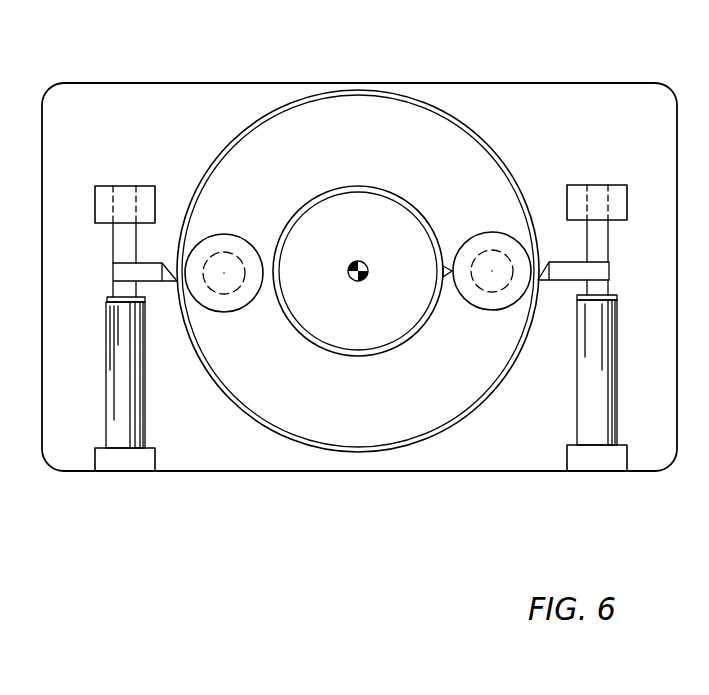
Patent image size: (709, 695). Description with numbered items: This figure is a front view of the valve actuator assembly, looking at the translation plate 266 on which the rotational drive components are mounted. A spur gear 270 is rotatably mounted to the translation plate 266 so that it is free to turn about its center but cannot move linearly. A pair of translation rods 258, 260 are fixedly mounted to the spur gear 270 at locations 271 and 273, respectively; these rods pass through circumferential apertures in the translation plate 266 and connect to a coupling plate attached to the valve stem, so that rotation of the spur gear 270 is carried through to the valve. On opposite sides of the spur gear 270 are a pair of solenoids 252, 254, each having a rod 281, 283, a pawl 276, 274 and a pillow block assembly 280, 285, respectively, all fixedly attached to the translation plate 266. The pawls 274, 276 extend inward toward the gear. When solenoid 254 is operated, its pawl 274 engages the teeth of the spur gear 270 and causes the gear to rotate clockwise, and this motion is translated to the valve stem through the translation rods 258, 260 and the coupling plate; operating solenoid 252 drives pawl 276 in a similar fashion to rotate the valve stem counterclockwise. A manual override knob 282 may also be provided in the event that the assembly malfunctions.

The translation plate 266 is at (542, 108).
The spur gear 270 is at (333, 420).
The manual override knob 282 is at (352, 332).
The location 273 is at (217, 240).
The translation rod 260 is at (220, 292).
The location 271 is at (497, 233).
The translation rod 258 is at (496, 290).
The pillow block assembly 280 is at (122, 200).
The rod 281 is at (126, 252).
The pawl 276 is at (136, 270).
The solenoid 252 is at (128, 409).
The pillow block assembly 285 is at (598, 198).
The rod 283 is at (597, 249).
The pawl 274 is at (597, 270).
The solenoid 254 is at (597, 411).